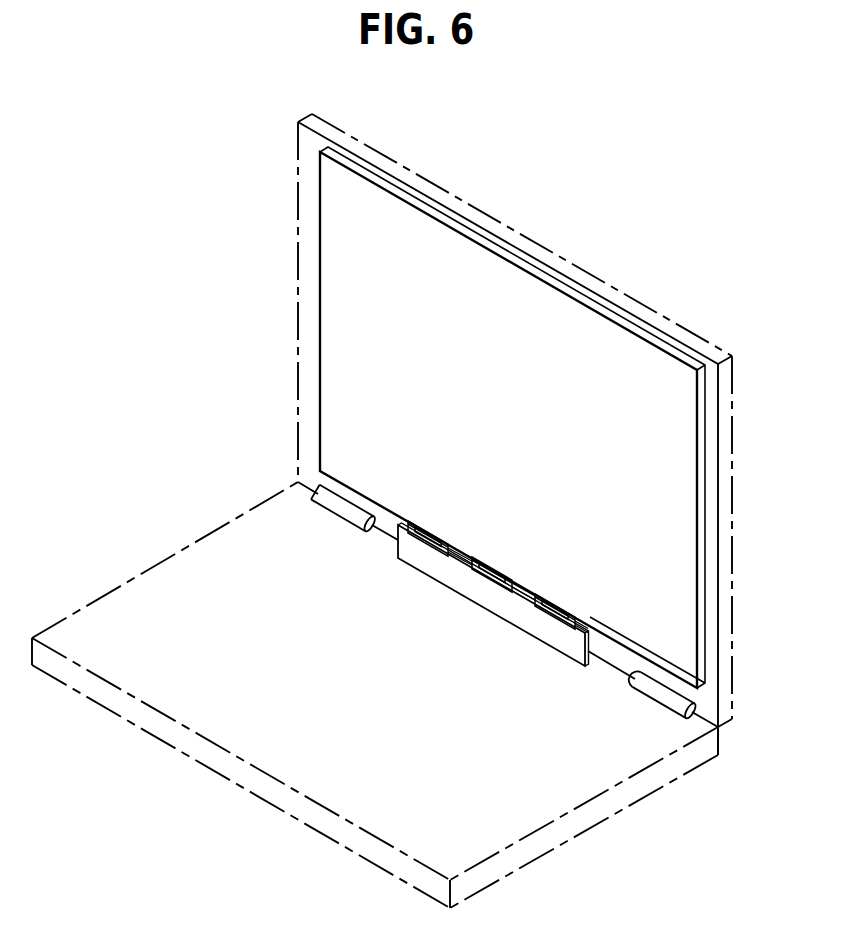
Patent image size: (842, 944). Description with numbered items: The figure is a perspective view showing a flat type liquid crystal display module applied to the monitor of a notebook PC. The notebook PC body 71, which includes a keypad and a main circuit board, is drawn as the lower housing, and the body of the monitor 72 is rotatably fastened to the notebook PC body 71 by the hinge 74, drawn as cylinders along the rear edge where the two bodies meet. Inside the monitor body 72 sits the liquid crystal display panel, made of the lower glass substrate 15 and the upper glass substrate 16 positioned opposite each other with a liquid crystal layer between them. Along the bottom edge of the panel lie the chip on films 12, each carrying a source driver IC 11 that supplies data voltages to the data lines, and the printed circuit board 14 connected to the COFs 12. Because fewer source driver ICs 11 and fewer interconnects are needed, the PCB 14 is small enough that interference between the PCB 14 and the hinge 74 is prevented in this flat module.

The source driver IC 11 is at (542, 615).
The chip on film 12 is at (568, 632).
The printed circuit board 14 is at (458, 580).
The lower glass substrate 15 is at (512, 417).
The upper glass substrate 16 is at (607, 318).
The body of the notebook PC 71 is at (597, 823).
The body of the monitor 72 is at (722, 555).
The hinge 74 is at (323, 498).